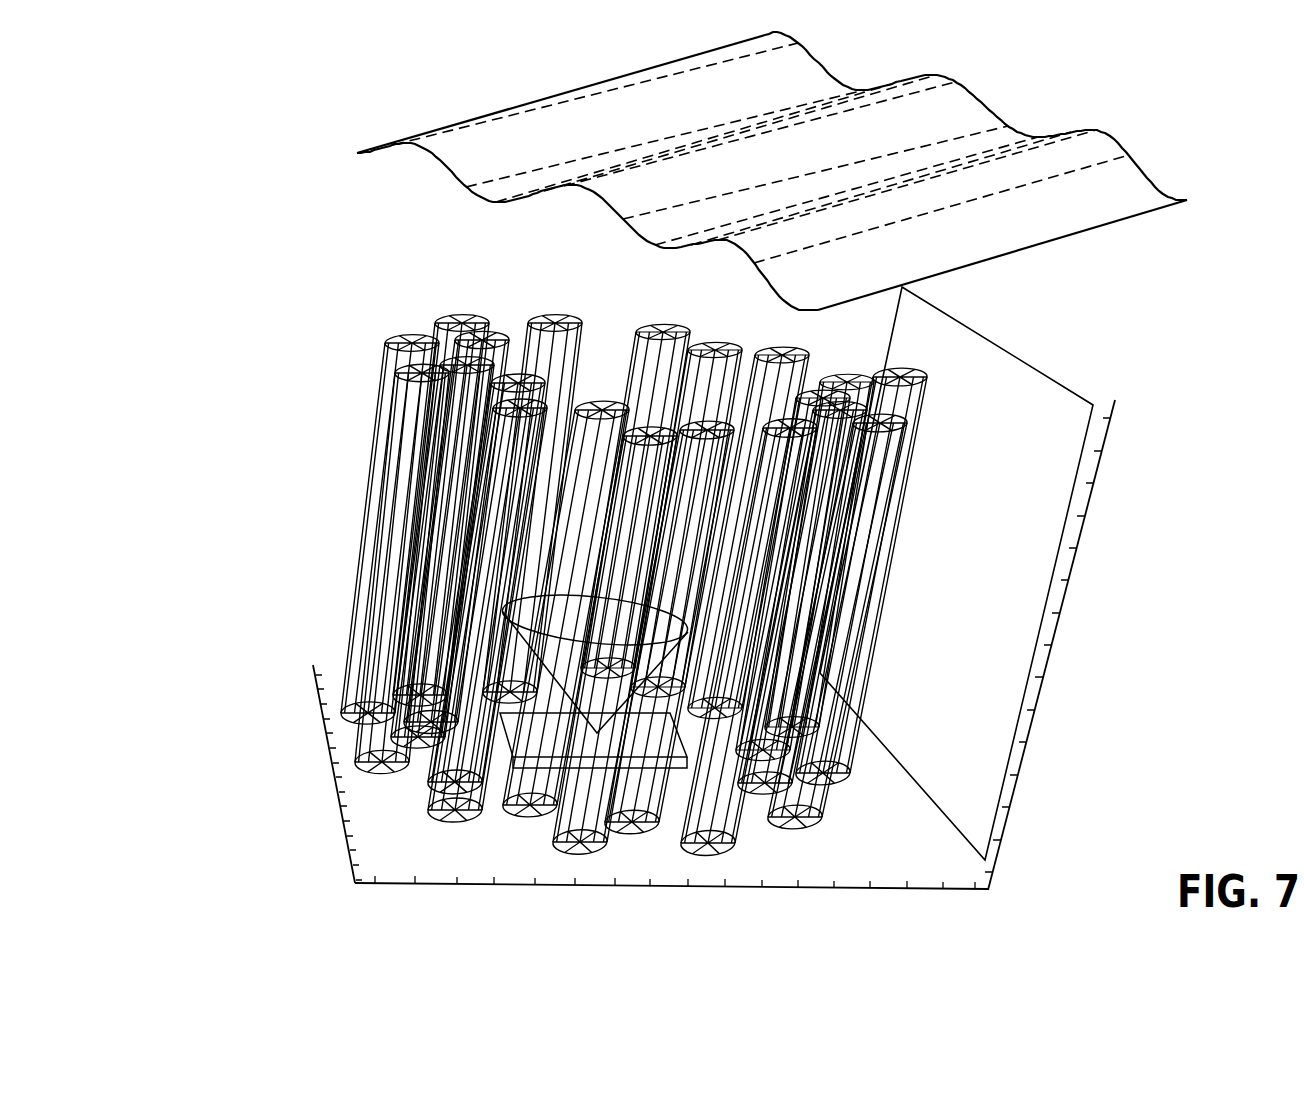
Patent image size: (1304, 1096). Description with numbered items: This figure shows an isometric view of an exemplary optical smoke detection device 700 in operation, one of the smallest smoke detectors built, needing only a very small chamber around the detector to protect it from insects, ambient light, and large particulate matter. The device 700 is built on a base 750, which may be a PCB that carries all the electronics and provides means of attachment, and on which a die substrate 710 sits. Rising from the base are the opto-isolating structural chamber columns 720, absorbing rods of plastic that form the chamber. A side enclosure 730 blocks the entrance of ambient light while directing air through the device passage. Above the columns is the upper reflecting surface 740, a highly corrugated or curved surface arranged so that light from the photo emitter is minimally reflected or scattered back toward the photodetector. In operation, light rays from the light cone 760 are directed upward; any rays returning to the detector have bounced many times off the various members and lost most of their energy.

The optical smoke detection device 700 is at (649, 675).
The die substrate 710 is at (660, 770).
The opto-isolating structural chamber columns 720 is at (573, 588).
The side enclosure 730 is at (1052, 371).
The upper reflecting surface 740 is at (342, 200).
The base 750 is at (950, 893).
The light cone 760 is at (578, 592).